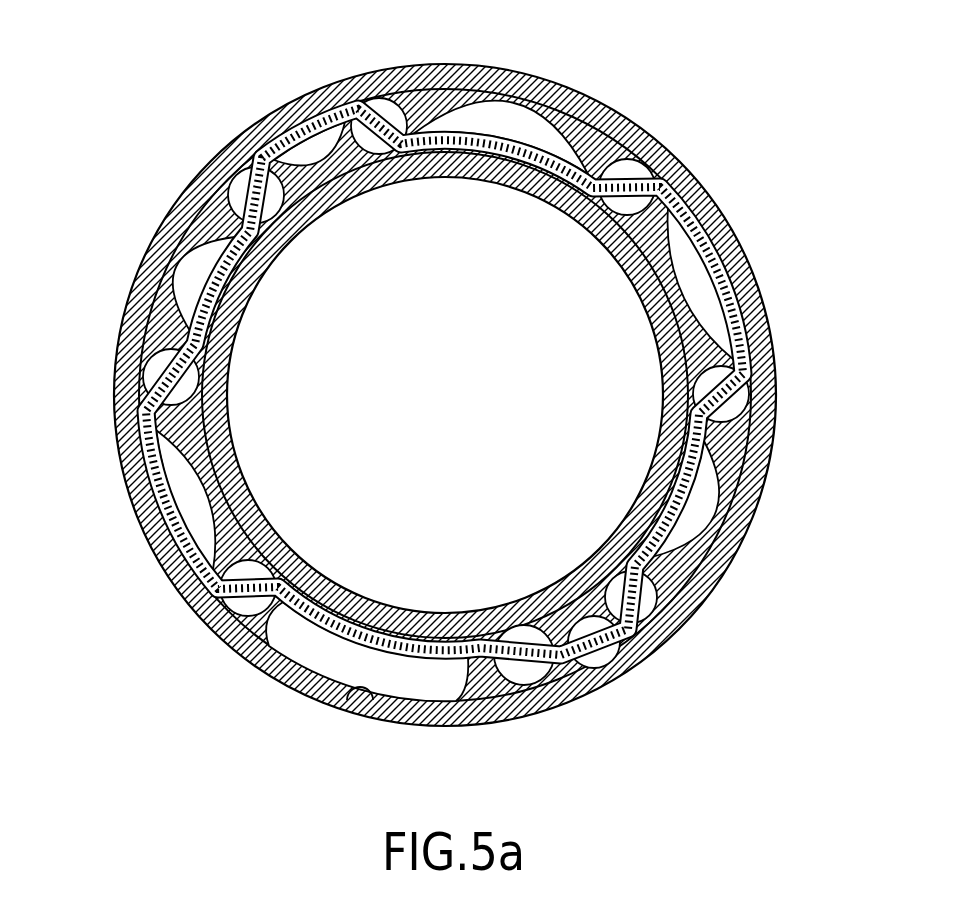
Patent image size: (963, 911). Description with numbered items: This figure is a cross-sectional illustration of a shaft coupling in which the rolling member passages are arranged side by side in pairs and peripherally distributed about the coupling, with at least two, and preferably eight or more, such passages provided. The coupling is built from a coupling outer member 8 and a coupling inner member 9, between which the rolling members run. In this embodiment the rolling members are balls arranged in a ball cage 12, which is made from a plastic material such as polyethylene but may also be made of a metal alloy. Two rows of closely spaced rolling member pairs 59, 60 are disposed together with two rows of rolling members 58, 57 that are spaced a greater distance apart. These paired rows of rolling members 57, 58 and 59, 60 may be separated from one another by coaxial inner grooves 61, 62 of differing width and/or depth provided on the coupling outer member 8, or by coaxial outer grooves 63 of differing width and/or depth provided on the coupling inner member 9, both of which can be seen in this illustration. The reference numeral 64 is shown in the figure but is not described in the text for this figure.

The coupling outer member 8 is at (116, 373).
The coupling inner member 9 is at (230, 408).
The ball cage 12 is at (212, 600).
The row of rolling members 57 is at (772, 397).
The row of rolling members 58 is at (645, 150).
The row of closely spaced rolling member pairs 59 is at (233, 173).
The row of closely spaced rolling member pairs 60 is at (372, 98).
The coaxial inner groove 61 is at (343, 695).
The coaxial inner groove 62 is at (700, 530).
The coaxial outer groove 63 is at (193, 498).
The bottom strand crossing voids 64 is at (447, 640).